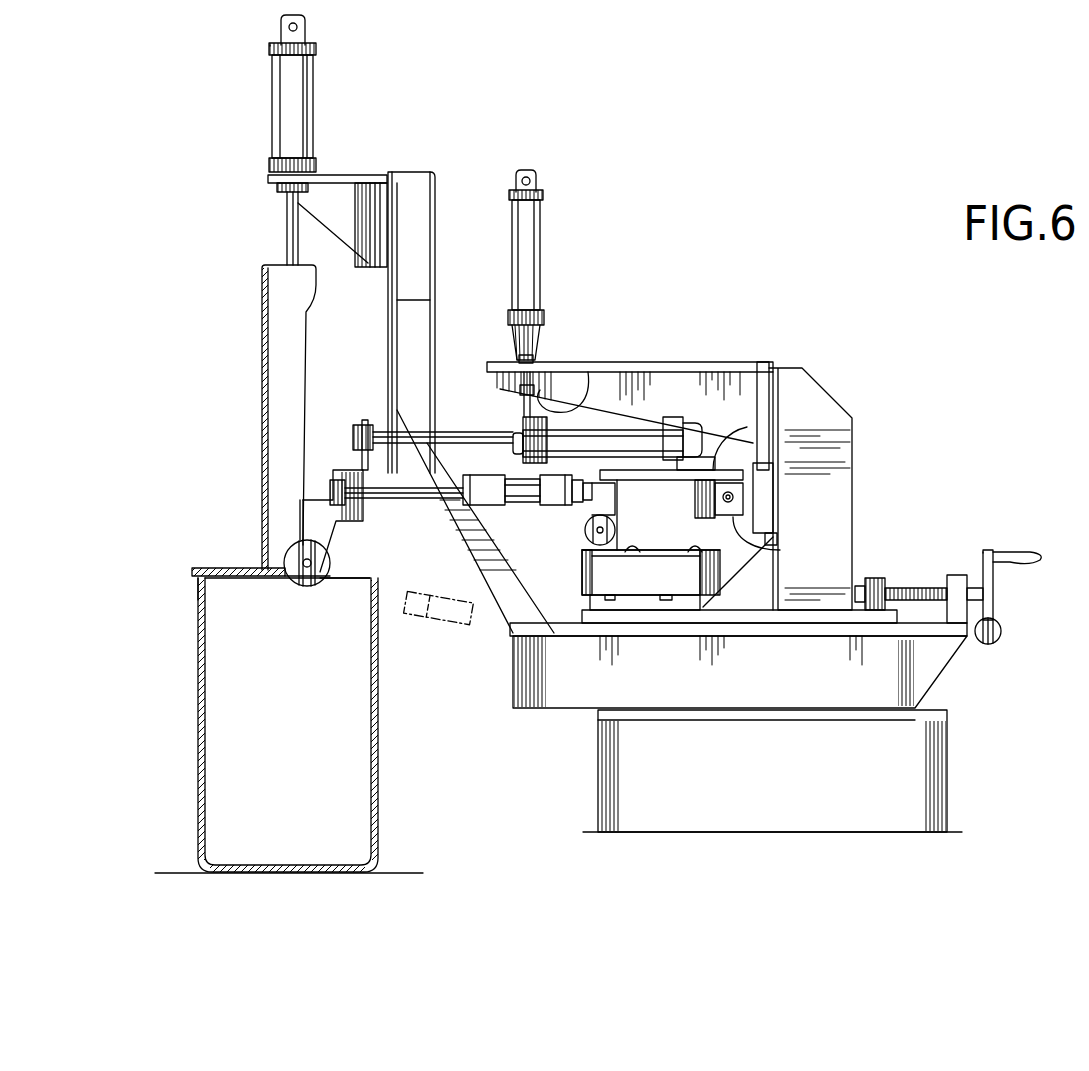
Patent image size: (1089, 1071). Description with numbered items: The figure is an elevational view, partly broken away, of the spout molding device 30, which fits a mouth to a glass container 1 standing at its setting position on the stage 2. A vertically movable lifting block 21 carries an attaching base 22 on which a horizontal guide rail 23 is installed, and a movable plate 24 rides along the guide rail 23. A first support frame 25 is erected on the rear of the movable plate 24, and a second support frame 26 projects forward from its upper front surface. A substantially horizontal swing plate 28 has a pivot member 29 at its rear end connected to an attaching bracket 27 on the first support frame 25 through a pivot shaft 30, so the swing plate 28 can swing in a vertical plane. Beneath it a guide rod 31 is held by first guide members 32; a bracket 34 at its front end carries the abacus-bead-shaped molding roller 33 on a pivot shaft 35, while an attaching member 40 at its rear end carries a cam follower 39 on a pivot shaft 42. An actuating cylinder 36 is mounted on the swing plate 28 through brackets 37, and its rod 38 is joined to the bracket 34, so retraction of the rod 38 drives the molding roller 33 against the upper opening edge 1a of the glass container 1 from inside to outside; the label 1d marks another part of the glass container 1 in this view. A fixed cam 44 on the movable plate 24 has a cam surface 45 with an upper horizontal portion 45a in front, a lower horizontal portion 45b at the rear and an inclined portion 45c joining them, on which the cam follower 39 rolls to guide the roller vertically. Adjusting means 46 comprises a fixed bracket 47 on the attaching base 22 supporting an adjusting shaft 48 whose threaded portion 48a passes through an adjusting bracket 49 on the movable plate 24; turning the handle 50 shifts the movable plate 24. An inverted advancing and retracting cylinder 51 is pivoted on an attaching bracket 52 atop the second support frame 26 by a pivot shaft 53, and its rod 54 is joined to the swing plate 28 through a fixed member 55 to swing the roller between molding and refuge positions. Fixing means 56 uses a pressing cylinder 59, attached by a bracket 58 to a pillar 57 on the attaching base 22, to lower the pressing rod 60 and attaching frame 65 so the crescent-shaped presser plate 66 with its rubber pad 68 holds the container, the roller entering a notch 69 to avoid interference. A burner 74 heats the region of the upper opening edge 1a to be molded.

The glass container 1 is at (378, 800).
The upper opening edge 1a is at (203, 606).
The container top edge 1d is at (275, 590).
The stage 2 is at (160, 872).
The lifting block 21 is at (948, 753).
The attaching base 22 is at (524, 708).
The guide rail 23 is at (810, 632).
The movable plate 24 is at (580, 618).
The first support frame 25 is at (852, 410).
The second support frame 26 is at (728, 362).
The attaching bracket 27 is at (748, 480).
The swing plate 28 is at (775, 442).
The pivot member 29 is at (770, 540).
The pivot shaft 30 is at (740, 493).
The guide rod 31 is at (363, 468).
The first guide members 32 is at (462, 507).
The molding roller 33 is at (270, 519).
The attaching bracket 34 is at (298, 507).
The pivot shaft 35 is at (320, 585).
The actuating cylinder 36 is at (622, 420).
The brackets 37 is at (503, 462).
The rod 38 is at (383, 432).
The cam follower 39 is at (585, 522).
The attaching member 40 is at (620, 485).
The pivot shaft 42 is at (597, 533).
The fixed cam 44 is at (700, 610).
The cam surface 45 is at (682, 548).
The upper horizontal cam surface portion 45a is at (590, 555).
The lower horizontal cam surface portion 45b is at (718, 552).
The inclined cam surface portion 45c is at (622, 592).
The adjusting means 46 is at (1036, 490).
The fixed bracket 47 is at (960, 574).
The adjusting shaft 48 is at (993, 598).
The threaded portion 48a is at (933, 587).
The adjusting bracket 49 is at (873, 578).
The handle 50 is at (1032, 560).
The advancing and retracting cylinder 51 is at (515, 232).
The attaching bracket 52 is at (510, 355).
The pivot shaft 53 is at (512, 307).
The advancing and retracting rod 54 is at (563, 372).
The fixed member 55 is at (583, 368).
The fixing means 56 is at (219, 170).
The pillar 57 is at (430, 188).
The bracket 58 is at (356, 178).
The pressing cylinder 59 is at (308, 76).
The pressing rod 60 is at (290, 240).
The attaching frame 65 is at (265, 398).
The presser plate 66 is at (218, 568).
The rubber pad 68 is at (241, 580).
The notch 69 is at (346, 576).
The burner 74 is at (408, 619).